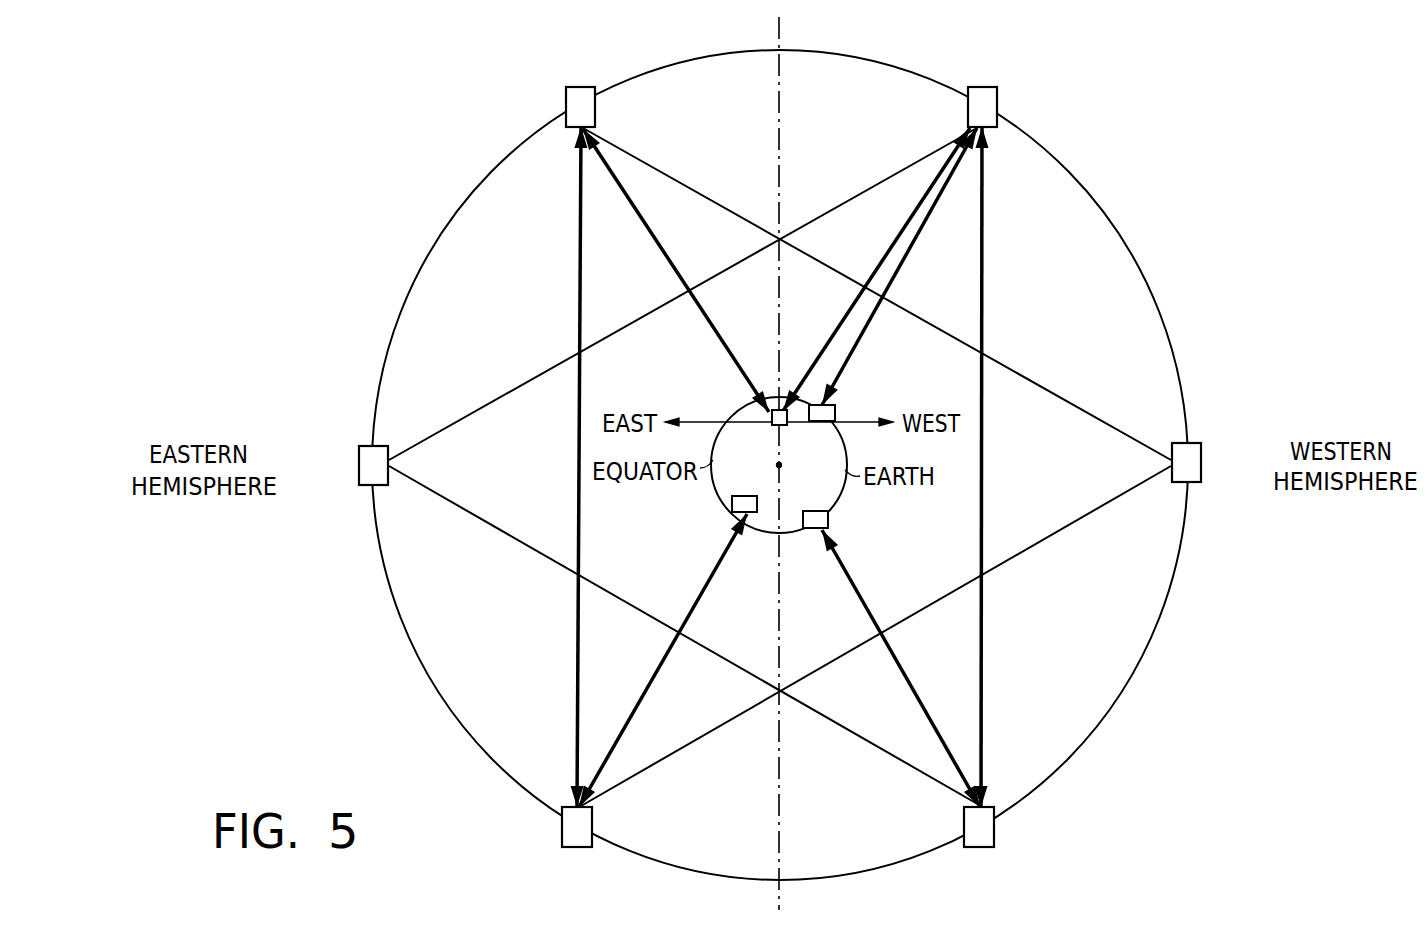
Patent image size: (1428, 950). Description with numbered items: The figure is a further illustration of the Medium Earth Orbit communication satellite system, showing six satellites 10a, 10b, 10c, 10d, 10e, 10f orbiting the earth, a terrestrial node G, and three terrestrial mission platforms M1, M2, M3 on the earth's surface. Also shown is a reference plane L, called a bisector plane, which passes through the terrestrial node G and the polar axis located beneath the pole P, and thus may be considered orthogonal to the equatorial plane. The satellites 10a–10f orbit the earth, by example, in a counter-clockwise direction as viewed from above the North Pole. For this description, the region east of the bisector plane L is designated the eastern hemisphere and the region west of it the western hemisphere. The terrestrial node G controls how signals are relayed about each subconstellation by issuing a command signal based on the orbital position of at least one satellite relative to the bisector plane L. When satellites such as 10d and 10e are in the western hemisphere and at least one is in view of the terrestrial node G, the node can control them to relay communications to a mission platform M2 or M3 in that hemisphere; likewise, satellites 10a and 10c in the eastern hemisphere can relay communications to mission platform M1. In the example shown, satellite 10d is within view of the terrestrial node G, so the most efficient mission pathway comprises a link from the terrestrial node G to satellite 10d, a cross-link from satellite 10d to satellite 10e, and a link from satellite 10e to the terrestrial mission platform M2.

The satellite 10a is at (611, 107).
The satellite 10b is at (1218, 462).
The satellite 10c is at (608, 826).
The satellite 10d is at (952, 107).
The satellite 10e is at (951, 826).
The satellite 10f is at (349, 465).
The terrestrial node G is at (776, 410).
The terrestrial mission platform M1 is at (732, 504).
The terrestrial mission platform M2 is at (828, 521).
The terrestrial mission platform M3 is at (835, 408).
The pole P is at (777, 463).
The reference plane L is at (780, 30).